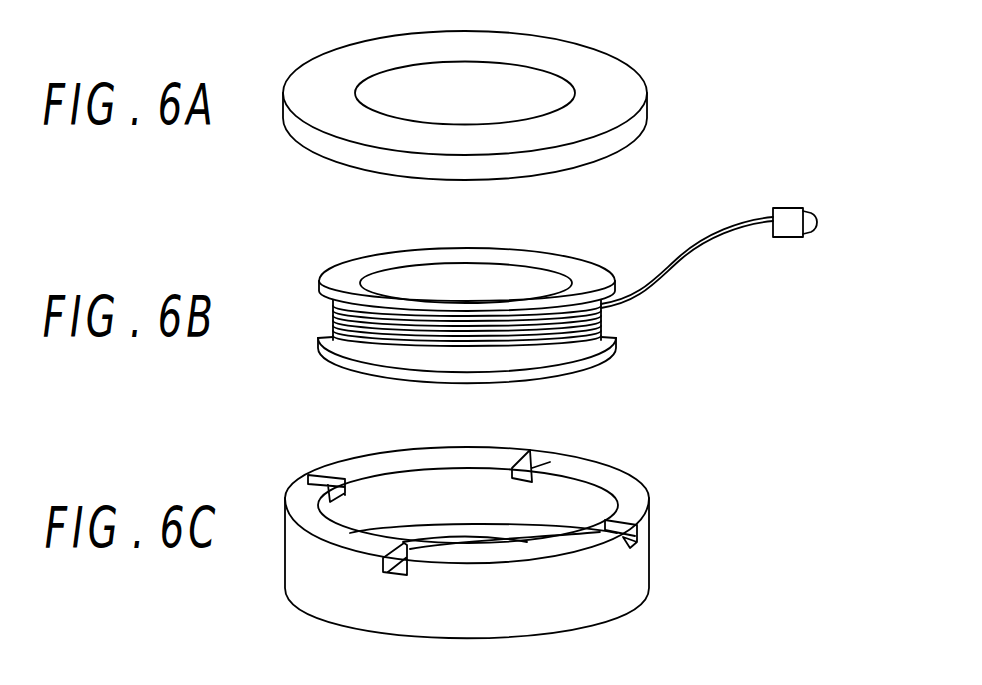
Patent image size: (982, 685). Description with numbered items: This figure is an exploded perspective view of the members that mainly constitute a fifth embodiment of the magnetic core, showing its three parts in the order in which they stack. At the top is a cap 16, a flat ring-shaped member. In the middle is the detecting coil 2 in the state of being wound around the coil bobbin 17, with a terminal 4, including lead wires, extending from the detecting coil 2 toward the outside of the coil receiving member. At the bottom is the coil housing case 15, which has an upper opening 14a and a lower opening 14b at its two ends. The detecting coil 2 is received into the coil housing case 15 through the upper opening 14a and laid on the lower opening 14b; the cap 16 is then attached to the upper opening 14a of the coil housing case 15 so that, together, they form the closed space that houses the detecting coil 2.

In FIG. 6A, the cap 16 is at (580, 63).
In FIG. 6B, the coil bobbin 17 is at (570, 265).
In FIG. 6B, the detecting coil 2 is at (330, 311).
In FIG. 6B, the terminal 4 is at (790, 229).
In FIG. 6C, the upper opening 14a is at (398, 468).
In FIG. 6C, the lower opening 14b is at (487, 547).
In FIG. 6C, the coil housing case 15 is at (503, 522).